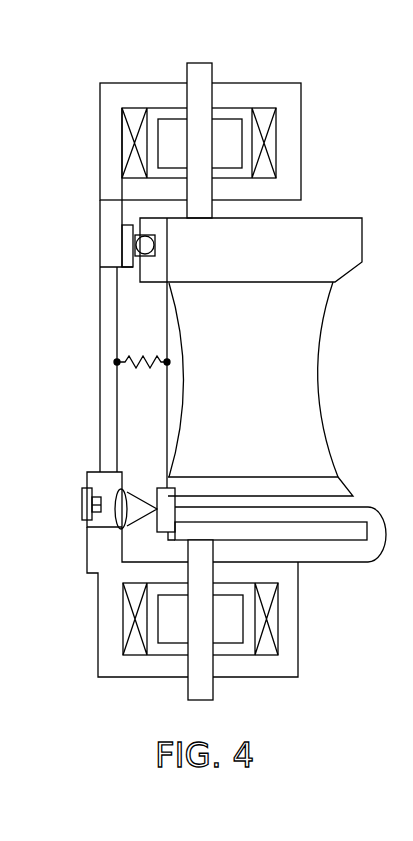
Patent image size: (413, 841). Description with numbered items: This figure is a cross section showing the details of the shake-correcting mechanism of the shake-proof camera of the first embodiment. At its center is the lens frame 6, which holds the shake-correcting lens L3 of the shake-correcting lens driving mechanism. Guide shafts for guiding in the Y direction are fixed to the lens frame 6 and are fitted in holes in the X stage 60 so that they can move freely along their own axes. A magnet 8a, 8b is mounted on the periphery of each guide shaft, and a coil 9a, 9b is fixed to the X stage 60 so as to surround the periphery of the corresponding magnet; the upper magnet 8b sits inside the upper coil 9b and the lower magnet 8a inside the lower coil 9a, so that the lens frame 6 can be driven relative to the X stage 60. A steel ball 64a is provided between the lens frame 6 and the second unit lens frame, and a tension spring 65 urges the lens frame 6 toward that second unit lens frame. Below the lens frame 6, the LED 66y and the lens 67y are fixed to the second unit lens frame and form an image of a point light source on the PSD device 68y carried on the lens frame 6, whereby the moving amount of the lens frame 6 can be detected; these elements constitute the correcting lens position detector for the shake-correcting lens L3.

The X stage 60 is at (130, 92).
The magnet 8b is at (227, 130).
The coil 9b is at (273, 145).
The steel ball 64a is at (138, 248).
The lens frame 6 is at (352, 253).
The tension spring 65 is at (135, 362).
The shake-correcting lens L3 is at (305, 390).
The LED 66y is at (82, 493).
The lens 67y is at (120, 508).
The PSD device 68y is at (155, 512).
The coil 9a is at (272, 622).
The magnet 8a is at (223, 630).